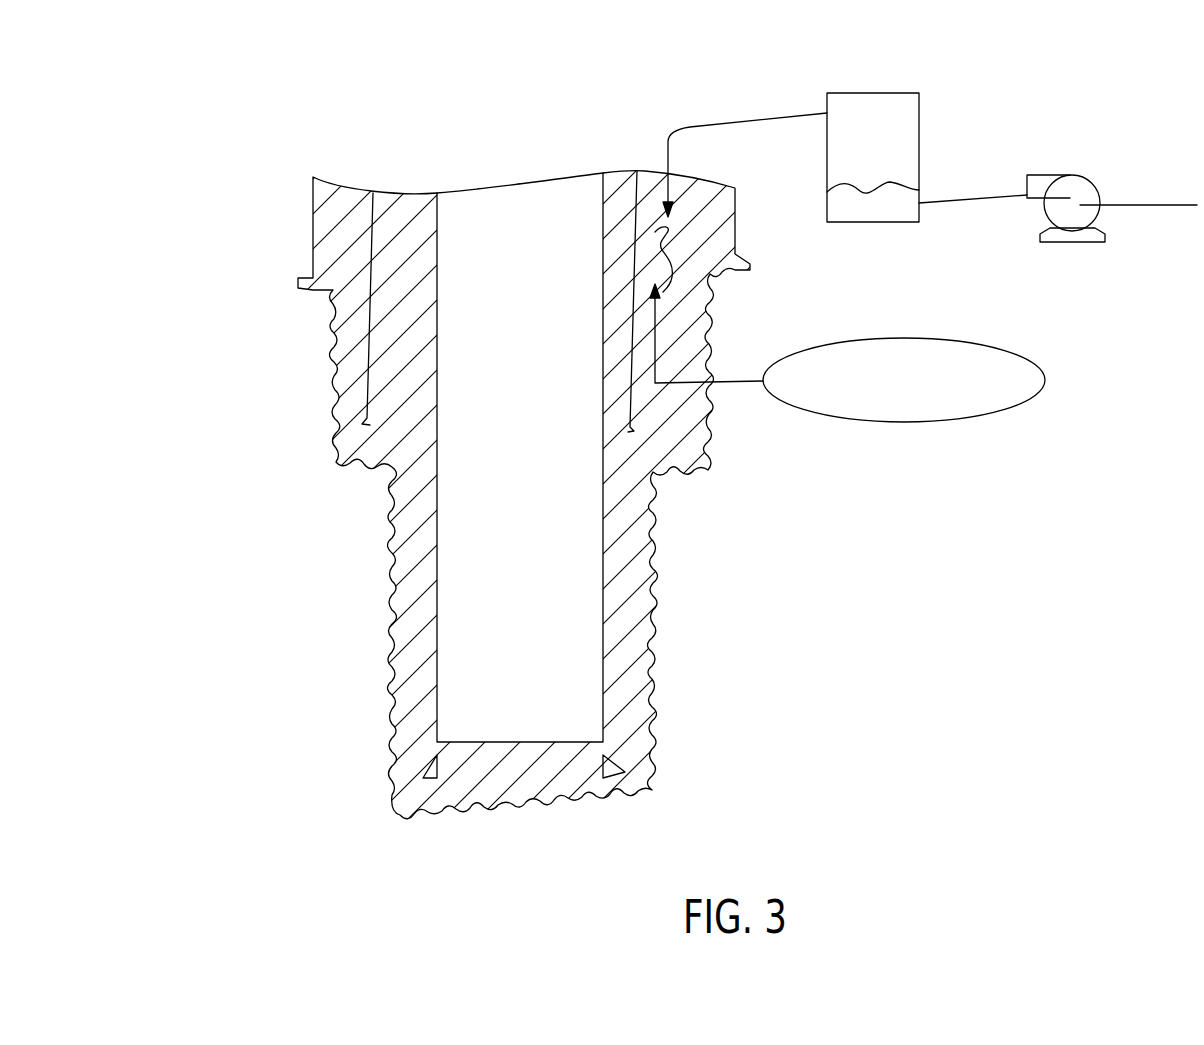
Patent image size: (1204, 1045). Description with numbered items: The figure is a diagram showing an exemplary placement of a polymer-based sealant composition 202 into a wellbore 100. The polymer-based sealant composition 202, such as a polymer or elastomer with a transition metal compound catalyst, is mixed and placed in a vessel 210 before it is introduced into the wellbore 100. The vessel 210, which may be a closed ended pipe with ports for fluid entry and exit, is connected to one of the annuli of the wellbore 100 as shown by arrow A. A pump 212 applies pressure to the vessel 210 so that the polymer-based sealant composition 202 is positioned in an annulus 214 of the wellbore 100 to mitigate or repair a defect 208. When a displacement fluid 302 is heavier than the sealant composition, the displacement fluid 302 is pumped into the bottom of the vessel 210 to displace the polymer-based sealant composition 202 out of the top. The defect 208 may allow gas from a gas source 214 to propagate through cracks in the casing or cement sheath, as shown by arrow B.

The wellbore 100 is at (208, 117).
The polymer-based sealant composition 202 is at (898, 128).
The defect 208 is at (676, 273).
The vessel 210 is at (989, 169).
The pump 212 is at (1072, 178).
The annulus 214 is at (1022, 406).
The displacement fluid 302 is at (875, 223).